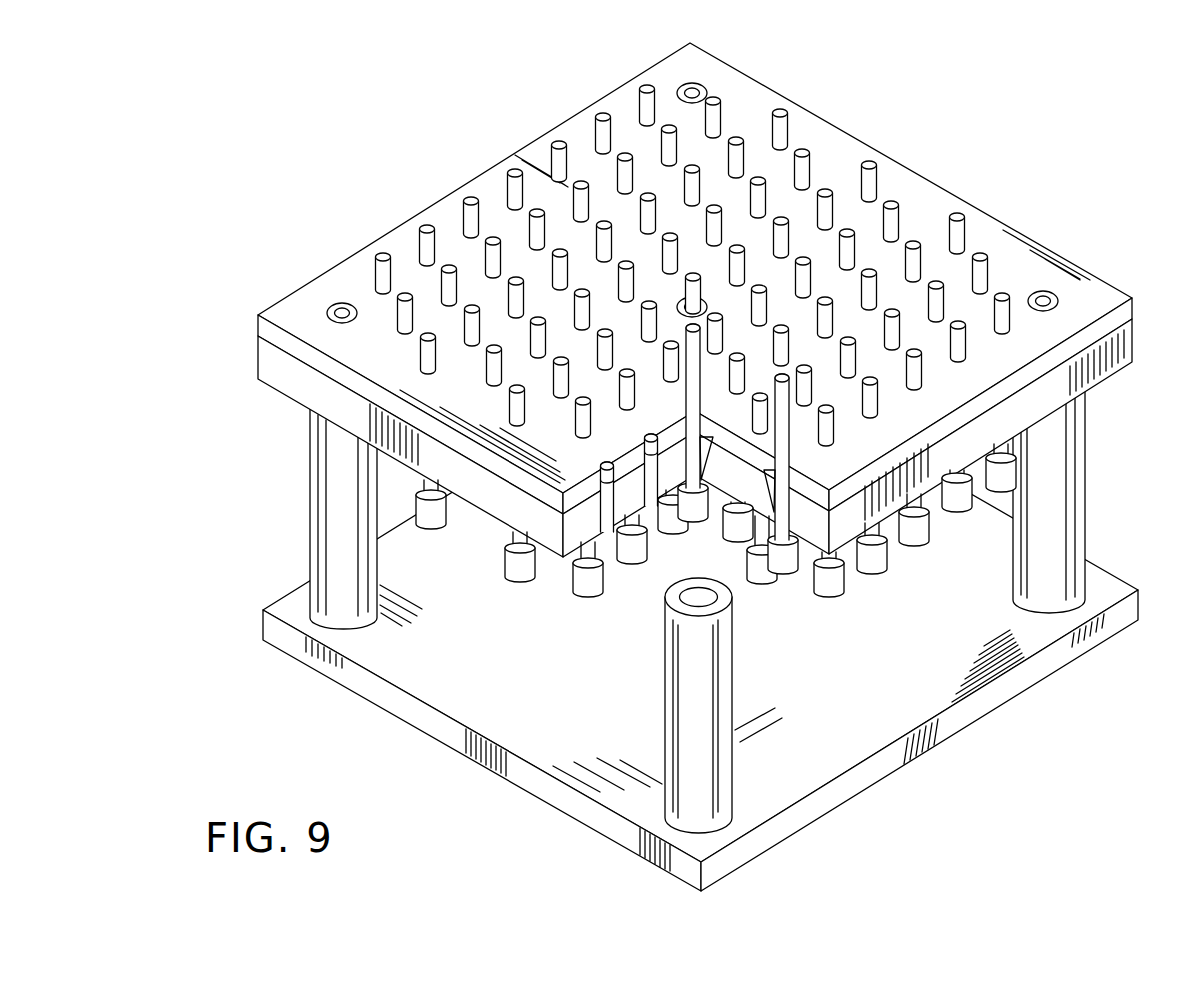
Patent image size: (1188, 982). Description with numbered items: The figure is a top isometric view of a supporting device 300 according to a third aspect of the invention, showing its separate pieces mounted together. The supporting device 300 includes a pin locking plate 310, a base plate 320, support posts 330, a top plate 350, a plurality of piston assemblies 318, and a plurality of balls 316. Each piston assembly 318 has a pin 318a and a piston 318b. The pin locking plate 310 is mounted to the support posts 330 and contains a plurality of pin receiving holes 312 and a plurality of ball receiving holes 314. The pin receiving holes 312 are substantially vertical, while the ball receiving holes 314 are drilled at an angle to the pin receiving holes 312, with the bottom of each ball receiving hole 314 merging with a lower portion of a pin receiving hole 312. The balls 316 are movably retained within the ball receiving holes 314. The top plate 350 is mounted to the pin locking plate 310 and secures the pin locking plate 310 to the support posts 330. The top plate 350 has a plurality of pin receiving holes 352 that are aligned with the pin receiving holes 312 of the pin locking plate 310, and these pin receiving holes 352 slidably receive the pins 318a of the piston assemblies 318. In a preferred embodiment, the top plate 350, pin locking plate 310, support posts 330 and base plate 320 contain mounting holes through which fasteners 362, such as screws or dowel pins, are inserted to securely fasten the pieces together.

The supporting device 300 is at (1034, 167).
The pin locking plate 310 is at (687, 300).
The pin receiving hole 312 is at (790, 505).
The ball receiving hole 314 is at (764, 472).
The ball 316 is at (773, 513).
The piston assembly 318 is at (465, 689).
The pin 318a is at (422, 240).
The piston 318b is at (588, 580).
The base plate 320 is at (288, 640).
The support post 330 is at (317, 462).
The top plate 350 is at (1080, 275).
The pin receiving hole 352 is at (1062, 398).
The fastener 362 is at (338, 307).